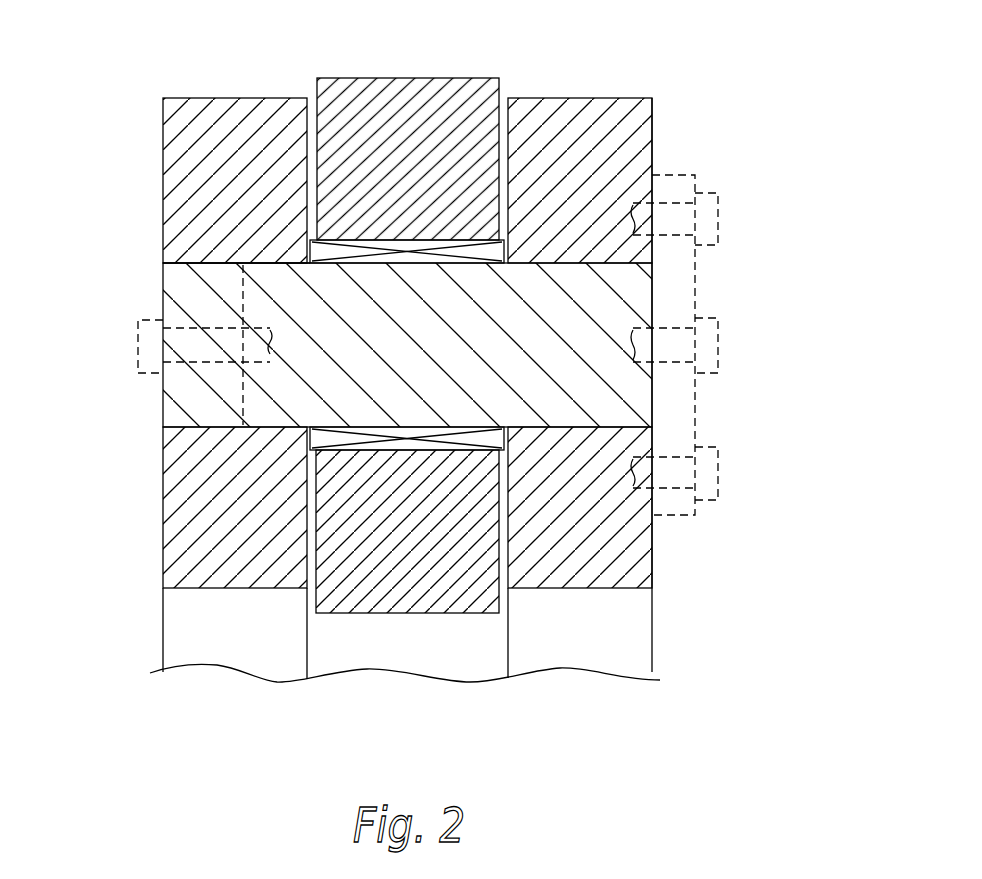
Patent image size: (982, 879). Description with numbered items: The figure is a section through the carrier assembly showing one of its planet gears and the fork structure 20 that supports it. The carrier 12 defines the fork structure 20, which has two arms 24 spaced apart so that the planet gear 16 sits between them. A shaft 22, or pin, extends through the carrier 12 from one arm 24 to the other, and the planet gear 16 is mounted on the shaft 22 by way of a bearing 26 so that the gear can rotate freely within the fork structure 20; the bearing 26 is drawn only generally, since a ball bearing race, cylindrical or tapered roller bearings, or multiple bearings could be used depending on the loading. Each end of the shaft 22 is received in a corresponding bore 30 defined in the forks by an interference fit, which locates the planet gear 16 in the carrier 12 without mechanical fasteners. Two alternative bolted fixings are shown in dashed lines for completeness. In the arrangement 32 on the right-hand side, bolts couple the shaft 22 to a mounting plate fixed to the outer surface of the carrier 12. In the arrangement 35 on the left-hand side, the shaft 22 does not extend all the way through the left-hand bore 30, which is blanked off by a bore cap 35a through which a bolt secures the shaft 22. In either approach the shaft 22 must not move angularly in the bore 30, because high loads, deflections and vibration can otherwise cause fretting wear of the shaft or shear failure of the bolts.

The carrier 12 is at (655, 617).
The planet gear 16 is at (470, 78).
The fork structure 20 is at (712, 127).
The shaft 22 is at (322, 387).
The arm 24 is at (268, 98).
The bearing 26 is at (330, 253).
The bore 30 is at (200, 263).
The bolt-fixing arrangement 32 is at (771, 368).
The bolt-fixing arrangement 35 is at (105, 372).
The bore cap 35a is at (138, 327).